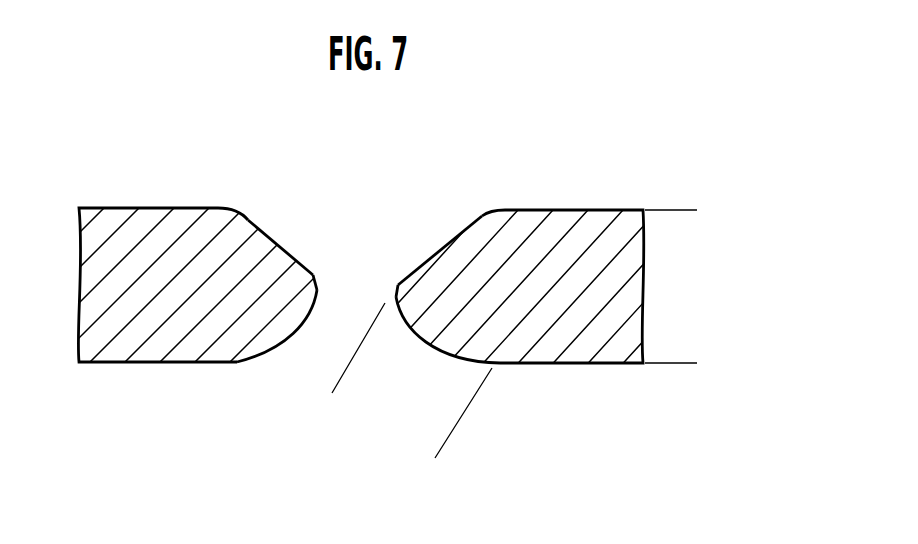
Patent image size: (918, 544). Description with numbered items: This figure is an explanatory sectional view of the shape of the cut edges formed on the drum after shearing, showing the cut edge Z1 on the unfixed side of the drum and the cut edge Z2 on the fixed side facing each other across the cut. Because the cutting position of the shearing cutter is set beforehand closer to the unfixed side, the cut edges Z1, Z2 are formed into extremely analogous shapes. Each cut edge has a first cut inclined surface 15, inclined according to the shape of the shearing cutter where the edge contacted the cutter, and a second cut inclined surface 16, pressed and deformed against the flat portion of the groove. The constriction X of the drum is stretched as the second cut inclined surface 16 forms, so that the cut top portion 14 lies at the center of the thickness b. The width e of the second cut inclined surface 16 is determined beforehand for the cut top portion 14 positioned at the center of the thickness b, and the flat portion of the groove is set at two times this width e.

The cut top portion 14 is at (318, 288).
The first cut inclined surface 15 is at (278, 225).
The second cut inclined surface 16 is at (265, 357).
The cut edge Z1 is at (437, 233).
The cut edge Z2 is at (303, 233).
The constriction X is at (277, 344).
The thickness b is at (683, 210).
The width e is at (446, 441).